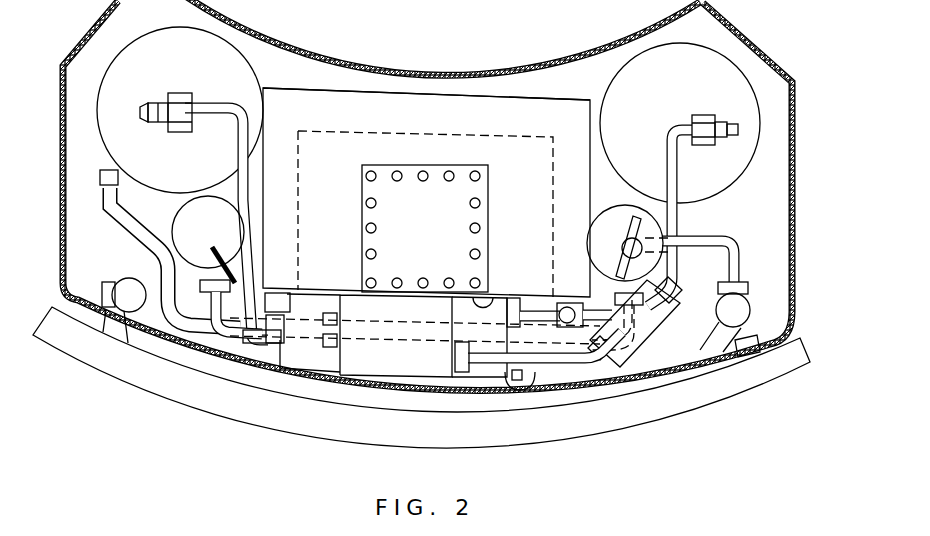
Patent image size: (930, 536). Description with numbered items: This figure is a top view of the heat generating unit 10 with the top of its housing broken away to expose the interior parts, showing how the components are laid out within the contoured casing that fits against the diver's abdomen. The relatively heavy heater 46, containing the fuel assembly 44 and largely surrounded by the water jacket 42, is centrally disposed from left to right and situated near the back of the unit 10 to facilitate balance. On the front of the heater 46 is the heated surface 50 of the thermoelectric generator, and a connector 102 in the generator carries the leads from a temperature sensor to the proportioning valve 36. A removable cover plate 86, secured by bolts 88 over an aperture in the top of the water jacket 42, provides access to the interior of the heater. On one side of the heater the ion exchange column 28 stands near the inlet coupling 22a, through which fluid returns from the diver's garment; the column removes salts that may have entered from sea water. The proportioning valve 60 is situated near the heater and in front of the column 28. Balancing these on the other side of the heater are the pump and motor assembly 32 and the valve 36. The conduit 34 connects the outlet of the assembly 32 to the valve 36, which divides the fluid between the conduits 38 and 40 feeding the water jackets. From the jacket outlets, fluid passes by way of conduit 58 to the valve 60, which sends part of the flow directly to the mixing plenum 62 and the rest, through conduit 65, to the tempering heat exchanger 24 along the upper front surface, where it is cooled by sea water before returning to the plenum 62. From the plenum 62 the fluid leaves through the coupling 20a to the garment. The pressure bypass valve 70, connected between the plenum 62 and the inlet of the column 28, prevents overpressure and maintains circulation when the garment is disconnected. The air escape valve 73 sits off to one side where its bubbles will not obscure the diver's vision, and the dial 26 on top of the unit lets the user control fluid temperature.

The heat generating unit 10 is at (812, 87).
The coupling 20a is at (184, 94).
The coupling 22a is at (700, 114).
The tempering heat exchanger 24 is at (674, 424).
The dial 26 is at (648, 225).
The ion exchange column 28 is at (744, 162).
The pump and motor assembly 32 is at (113, 61).
The conduit 34 is at (113, 226).
The temperature controlled proportioning valve 36 is at (182, 218).
The conduit 38 is at (291, 351).
The conduit 40 is at (236, 326).
The water jacket 42 is at (354, 122).
The fuel assembly 44 is at (420, 215).
The heater 46 is at (526, 96).
The heated surface 50 is at (499, 296).
The conduit 58 is at (536, 310).
The temperature controlled proportioning valve 60 is at (600, 237).
The mixing plenum 62 is at (396, 368).
The conduit 65 is at (560, 340).
The pressure bypass valve 70 is at (655, 318).
The air escape valve 73 is at (128, 288).
The removable cover plate 86 is at (468, 221).
The bolts 88 is at (364, 227).
The connector 102 is at (516, 382).